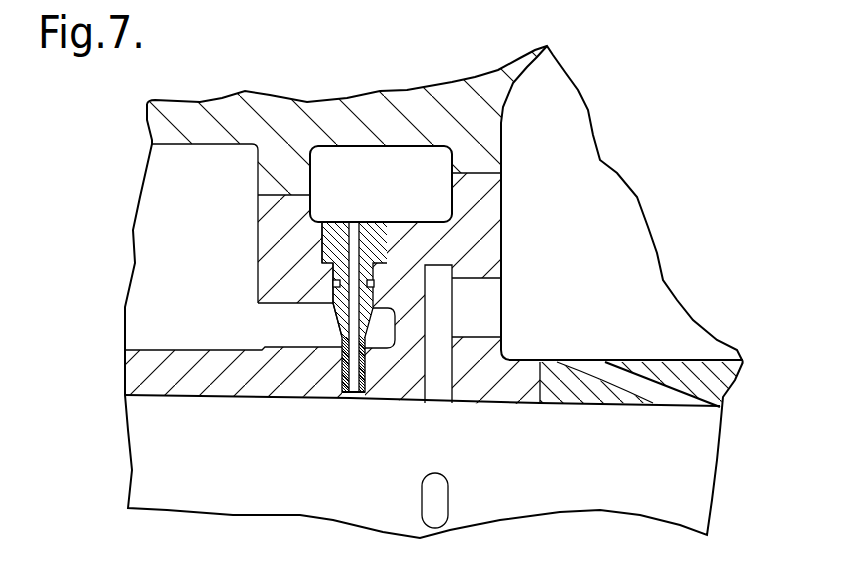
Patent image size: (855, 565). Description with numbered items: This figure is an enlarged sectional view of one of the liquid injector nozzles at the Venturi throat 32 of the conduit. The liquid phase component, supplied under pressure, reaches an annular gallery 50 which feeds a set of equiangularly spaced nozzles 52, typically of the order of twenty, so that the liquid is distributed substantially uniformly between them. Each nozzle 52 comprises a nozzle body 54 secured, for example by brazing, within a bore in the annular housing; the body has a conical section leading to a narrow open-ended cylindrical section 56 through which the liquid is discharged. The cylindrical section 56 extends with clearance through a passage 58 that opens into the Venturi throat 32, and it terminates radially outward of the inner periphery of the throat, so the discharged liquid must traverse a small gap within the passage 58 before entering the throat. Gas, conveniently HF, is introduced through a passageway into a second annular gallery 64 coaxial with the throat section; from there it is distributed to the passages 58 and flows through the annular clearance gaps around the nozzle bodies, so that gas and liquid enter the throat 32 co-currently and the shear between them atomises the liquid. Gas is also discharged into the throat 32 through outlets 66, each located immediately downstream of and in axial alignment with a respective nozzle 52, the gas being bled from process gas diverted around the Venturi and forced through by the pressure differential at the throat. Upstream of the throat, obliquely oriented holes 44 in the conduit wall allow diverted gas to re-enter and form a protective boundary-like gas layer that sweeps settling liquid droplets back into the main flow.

The Venturi throat 32 is at (240, 401).
The holes 44 is at (675, 398).
The annular gallery 50 is at (388, 188).
The nozzle 52 is at (328, 245).
The nozzle body 54 is at (345, 322).
The cylindrical section 56 is at (342, 377).
The passage 58 is at (367, 378).
The annular gallery 64 is at (210, 280).
The outlets 66 is at (440, 402).